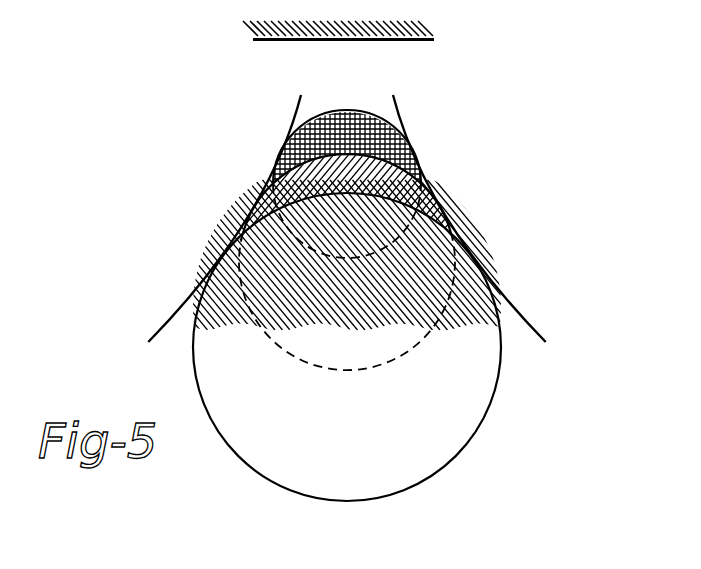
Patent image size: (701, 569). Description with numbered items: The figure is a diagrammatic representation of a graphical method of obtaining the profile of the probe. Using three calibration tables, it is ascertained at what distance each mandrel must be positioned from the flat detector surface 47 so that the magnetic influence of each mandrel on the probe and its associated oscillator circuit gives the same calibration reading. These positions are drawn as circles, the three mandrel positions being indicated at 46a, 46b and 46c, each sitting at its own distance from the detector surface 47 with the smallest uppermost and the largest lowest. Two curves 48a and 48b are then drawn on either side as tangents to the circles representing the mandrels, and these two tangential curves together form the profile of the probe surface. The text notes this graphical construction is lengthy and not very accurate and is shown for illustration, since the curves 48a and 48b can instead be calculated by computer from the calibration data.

The flat detector surface 47 is at (415, 41).
The mandrel position 46a is at (396, 137).
The mandrel position 46b is at (397, 188).
The mandrel position 46c is at (437, 254).
The curve 48a is at (172, 325).
The curve 48b is at (512, 306).